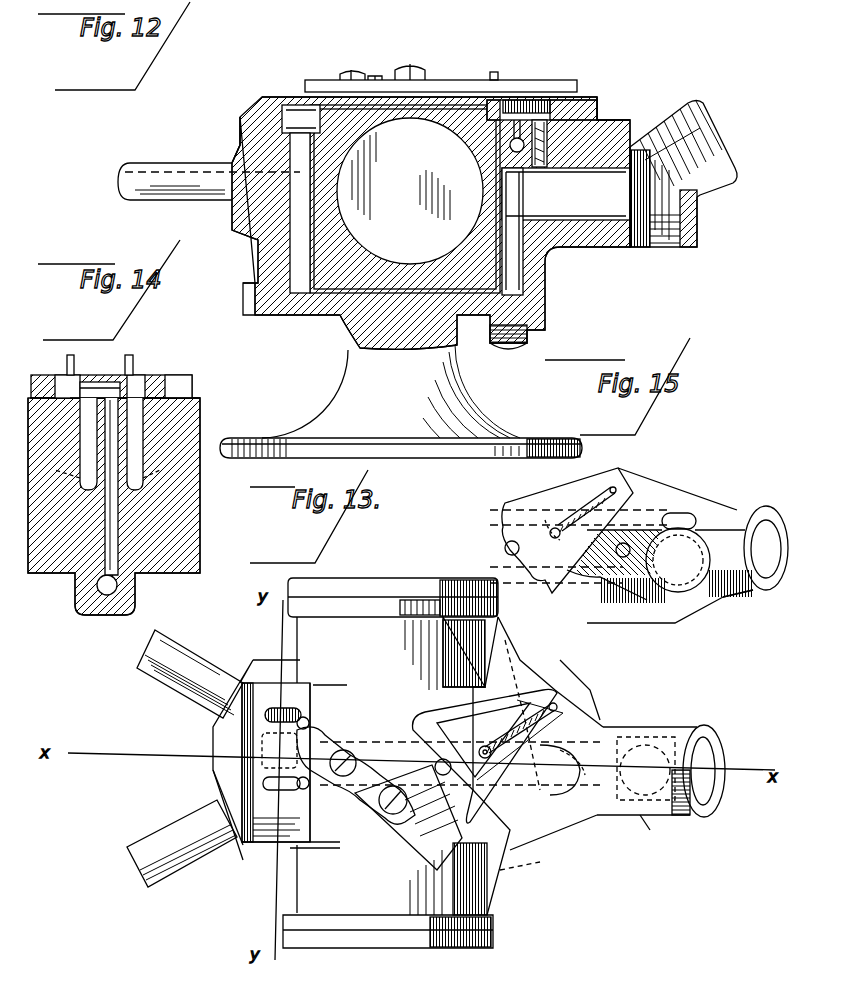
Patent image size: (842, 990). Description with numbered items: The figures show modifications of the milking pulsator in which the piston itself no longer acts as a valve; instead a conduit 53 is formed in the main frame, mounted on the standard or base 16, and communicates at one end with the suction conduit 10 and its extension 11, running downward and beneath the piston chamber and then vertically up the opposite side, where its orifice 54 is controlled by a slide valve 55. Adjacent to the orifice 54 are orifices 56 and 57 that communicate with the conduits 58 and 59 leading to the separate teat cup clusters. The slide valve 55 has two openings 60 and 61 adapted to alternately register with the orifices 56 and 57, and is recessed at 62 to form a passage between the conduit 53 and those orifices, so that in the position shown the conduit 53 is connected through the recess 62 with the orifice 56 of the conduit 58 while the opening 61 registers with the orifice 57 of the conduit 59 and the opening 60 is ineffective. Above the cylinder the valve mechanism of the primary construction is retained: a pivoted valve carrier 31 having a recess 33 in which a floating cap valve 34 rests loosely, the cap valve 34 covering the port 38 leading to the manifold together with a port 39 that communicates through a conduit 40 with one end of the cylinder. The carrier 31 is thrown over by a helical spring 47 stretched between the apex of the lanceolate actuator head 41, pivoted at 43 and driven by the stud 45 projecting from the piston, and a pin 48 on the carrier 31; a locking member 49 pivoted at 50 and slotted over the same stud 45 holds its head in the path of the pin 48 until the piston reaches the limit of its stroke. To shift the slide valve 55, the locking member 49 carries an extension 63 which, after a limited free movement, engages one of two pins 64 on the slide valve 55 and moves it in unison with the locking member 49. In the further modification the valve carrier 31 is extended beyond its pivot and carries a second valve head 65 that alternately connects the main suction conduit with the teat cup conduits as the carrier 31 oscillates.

In FIG. 12, the suction conduit 10 is at (728, 150).
In FIG. 13, the suction conduit 10 is at (726, 778).
In FIG. 12, the suction conduit extension 11 is at (660, 250).
In FIG. 13, the suction conduit extension 11 is at (670, 825).
In FIG. 12, the standard or base 16 is at (391, 391).
In FIG. 12, the valve carrier 31 is at (585, 80).
In FIG. 13, the valve carrier 31 is at (588, 690).
In FIG. 15, the valve carrier 31 is at (690, 480).
In FIG. 12, the recess or chamber 33 is at (405, 206).
In FIG. 12, the floating cap valve 34 is at (512, 98).
In FIG. 13, the floating cap valve 34 is at (620, 730).
In FIG. 12, the port or conduit 38 is at (600, 118).
In FIG. 13, the port or conduit 38 is at (575, 838).
In FIG. 15, the port or conduit 38 is at (633, 493).
In FIG. 12, the port 39 is at (540, 110).
In FIG. 13, the port 39 is at (575, 690).
In FIG. 15, the port 39 is at (598, 592).
In FIG. 12, the conduit 40 is at (545, 120).
In FIG. 13, the conduit 40 is at (510, 650).
In FIG. 12, the valve actuator head 41 is at (455, 80).
In FIG. 13, the valve actuator head 41 is at (425, 712).
In FIG. 15, the valve actuator head 41 is at (500, 500).
In FIG. 13, the actuator pivot 43 is at (434, 758).
In FIG. 12, the stud 45 is at (412, 64).
In FIG. 13, the stud 45 is at (388, 815).
In FIG. 13, the helical spring 47 is at (545, 685).
In FIG. 15, the helical spring 47 is at (600, 485).
In FIG. 12, the stud or pin 48 is at (492, 72).
In FIG. 13, the stud or pin 48 is at (478, 748).
In FIG. 12, the locking member 49 is at (372, 76).
In FIG. 13, the locking member 49 is at (408, 817).
In FIG. 12, the locking member pivot 50 is at (348, 70).
In FIG. 13, the locking member pivot 50 is at (356, 758).
In FIG. 14, the conduit 53 is at (120, 582).
In FIG. 13, the conduit 53 is at (356, 765).
In FIG. 12, the orifice 54 is at (250, 122).
In FIG. 14, the orifice 54 is at (190, 384).
In FIG. 13, the orifice 54 is at (250, 758).
In FIG. 15, the orifice 54 is at (752, 510).
In FIG. 12, the slide valve 55 is at (290, 104).
In FIG. 14, the slide valve 55 is at (160, 375).
In FIG. 13, the slide valve 55 is at (298, 692).
In FIG. 14, the orifice 56 is at (80, 440).
In FIG. 13, the orifice 56 is at (213, 720).
In FIG. 15, the orifice 56 is at (695, 512).
In FIG. 14, the orifice 57 is at (143, 440).
In FIG. 13, the orifice 57 is at (225, 790).
In FIG. 15, the orifice 57 is at (710, 612).
In FIG. 12, the conduit 58 is at (170, 170).
In FIG. 14, the conduit 58 is at (55, 478).
In FIG. 13, the conduit 58 is at (140, 672).
In FIG. 14, the conduit 59 is at (180, 475).
In FIG. 13, the conduit 59 is at (170, 835).
In FIG. 14, the opening 60 is at (64, 375).
In FIG. 13, the opening 60 is at (312, 715).
In FIG. 14, the opening 61 is at (143, 376).
In FIG. 13, the opening 61 is at (305, 800).
In FIG. 12, the recess 62 is at (298, 104).
In FIG. 14, the recess 62 is at (102, 382).
In FIG. 13, the extension 63 is at (305, 740).
In FIG. 14, the studs or pins 64 is at (72, 355).
In FIG. 13, the studs or pins 64 is at (312, 720).
In FIG. 15, the second valve head 65 is at (700, 515).